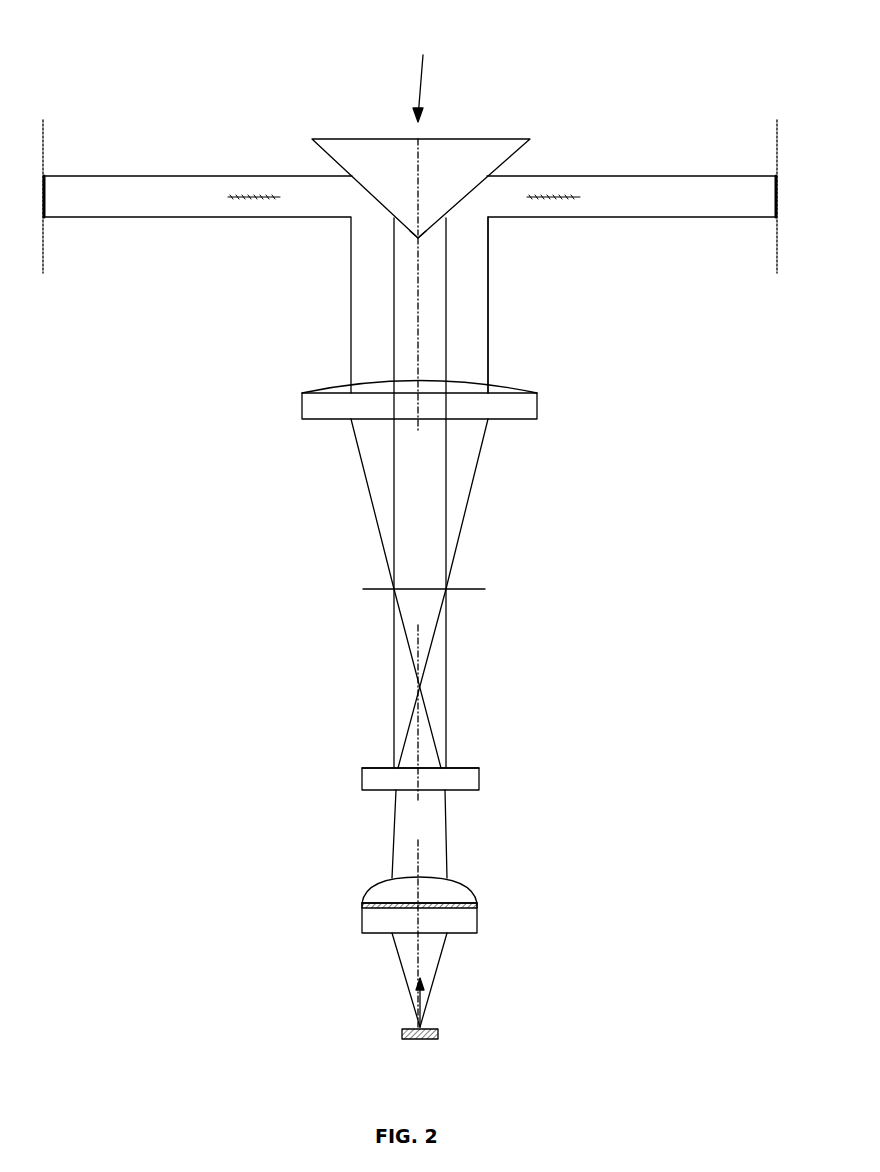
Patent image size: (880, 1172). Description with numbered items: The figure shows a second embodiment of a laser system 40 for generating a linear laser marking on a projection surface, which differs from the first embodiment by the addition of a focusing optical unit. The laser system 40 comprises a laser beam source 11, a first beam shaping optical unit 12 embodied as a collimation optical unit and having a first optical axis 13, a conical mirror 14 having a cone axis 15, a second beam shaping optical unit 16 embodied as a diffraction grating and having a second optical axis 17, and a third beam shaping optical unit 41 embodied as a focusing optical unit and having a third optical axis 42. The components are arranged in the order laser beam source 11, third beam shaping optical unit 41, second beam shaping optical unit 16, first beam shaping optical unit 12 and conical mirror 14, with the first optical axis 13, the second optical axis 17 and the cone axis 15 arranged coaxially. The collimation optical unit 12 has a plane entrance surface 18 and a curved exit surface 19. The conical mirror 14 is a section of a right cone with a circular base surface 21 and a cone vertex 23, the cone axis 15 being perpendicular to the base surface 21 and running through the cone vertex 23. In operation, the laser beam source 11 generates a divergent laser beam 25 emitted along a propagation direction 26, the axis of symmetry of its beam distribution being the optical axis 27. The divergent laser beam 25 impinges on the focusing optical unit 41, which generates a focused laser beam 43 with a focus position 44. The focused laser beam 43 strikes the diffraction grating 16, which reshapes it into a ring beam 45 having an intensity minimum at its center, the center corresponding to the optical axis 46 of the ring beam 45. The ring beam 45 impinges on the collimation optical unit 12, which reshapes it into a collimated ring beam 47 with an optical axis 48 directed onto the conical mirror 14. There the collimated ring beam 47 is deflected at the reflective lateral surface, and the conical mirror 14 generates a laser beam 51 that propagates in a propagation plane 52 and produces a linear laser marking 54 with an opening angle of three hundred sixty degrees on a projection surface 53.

The laser beam source 11 is at (328, 1031).
The first beam shaping optical unit 12 is at (364, 409).
The first optical axis 13 is at (418, 351).
The conical mirror 14 is at (421, 74).
The cone axis 15 is at (420, 160).
The second beam shaping optical unit 16 is at (347, 768).
The second optical axis 17 is at (418, 757).
The entrance surface 18 is at (518, 421).
The exit surface 19 is at (523, 390).
The base surface 21 is at (341, 137).
The cone vertex 23 is at (422, 254).
The laser beam 25 is at (400, 957).
The propagation direction 26 is at (418, 1010).
The optical axis of the laser beam 27 is at (424, 969).
The laser system 40 is at (677, 1003).
The third beam shaping optical unit 41 is at (367, 933).
The third optical axis 42 is at (420, 889).
The focused laser beam 43 is at (392, 834).
The focus position 44 is at (408, 589).
The ring beam 45 is at (372, 504).
The optical axis of the ring beam 46 is at (418, 654).
The collimated ring beam 47 is at (490, 286).
The optical axis of the collimated ring beam 48 is at (418, 302).
The laser beam 51 is at (162, 176).
The propagation plane 52 is at (256, 196).
The projection surface 53 is at (50, 132).
The linear laser marking 54 is at (50, 196).